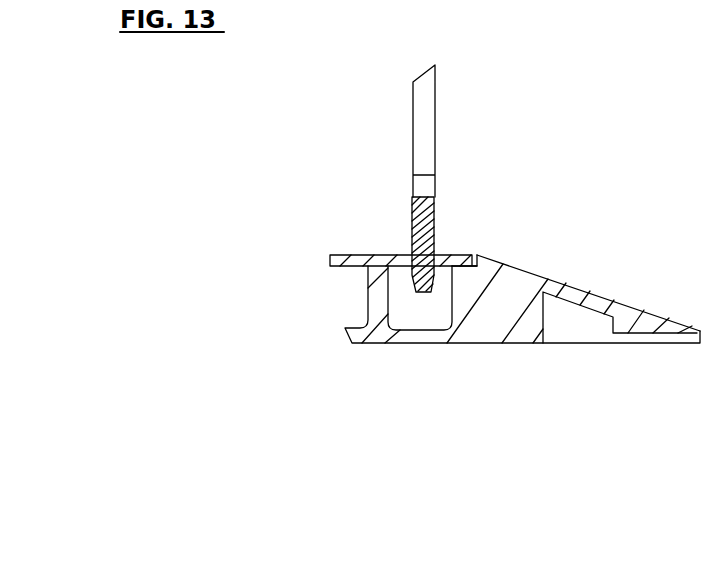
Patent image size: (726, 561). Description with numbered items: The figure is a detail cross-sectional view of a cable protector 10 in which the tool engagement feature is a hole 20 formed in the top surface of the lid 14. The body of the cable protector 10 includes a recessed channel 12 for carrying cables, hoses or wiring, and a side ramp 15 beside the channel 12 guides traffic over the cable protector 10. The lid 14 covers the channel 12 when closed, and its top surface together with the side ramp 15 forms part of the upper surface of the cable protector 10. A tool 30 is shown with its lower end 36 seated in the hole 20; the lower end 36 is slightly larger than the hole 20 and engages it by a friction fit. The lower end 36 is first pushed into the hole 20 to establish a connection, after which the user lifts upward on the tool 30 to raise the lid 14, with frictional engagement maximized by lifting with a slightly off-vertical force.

The cable protector 10 is at (285, 267).
The channels 12 is at (418, 331).
The lid 14 is at (343, 254).
The side ramps 15 is at (559, 283).
The hole 20 is at (438, 256).
The tool 30 is at (450, 135).
The lower end 36 is at (435, 227).